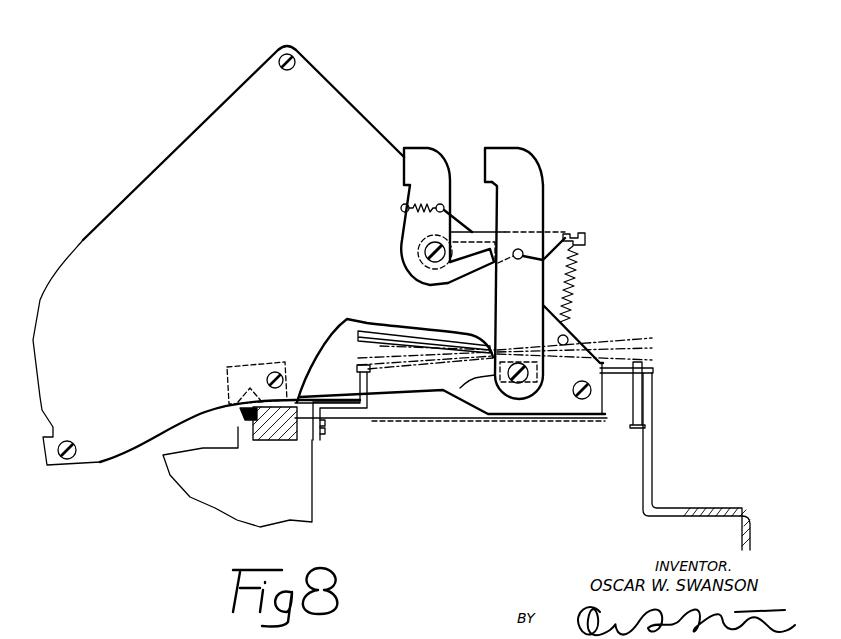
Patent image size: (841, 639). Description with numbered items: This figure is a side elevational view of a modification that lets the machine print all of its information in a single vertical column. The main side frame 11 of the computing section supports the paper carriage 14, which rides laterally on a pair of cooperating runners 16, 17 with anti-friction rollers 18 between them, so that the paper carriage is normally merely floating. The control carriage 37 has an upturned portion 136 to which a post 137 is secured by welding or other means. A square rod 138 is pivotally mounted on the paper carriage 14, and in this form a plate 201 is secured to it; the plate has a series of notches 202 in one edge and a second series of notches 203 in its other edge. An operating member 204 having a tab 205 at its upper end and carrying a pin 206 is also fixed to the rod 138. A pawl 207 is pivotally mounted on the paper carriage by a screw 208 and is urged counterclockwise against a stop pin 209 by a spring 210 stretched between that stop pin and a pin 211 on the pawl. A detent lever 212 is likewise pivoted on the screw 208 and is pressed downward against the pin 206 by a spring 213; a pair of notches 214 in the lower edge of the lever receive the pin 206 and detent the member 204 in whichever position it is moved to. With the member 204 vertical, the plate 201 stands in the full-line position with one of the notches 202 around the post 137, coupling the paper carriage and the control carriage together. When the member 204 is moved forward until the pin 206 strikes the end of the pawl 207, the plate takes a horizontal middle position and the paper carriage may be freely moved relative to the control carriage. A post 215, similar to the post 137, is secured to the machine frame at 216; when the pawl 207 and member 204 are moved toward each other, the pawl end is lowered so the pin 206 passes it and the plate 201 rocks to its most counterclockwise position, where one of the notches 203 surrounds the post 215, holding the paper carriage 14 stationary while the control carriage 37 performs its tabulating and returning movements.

The main side frame 11 is at (310, 480).
The paper carriage 14 is at (94, 228).
The runner 16 is at (247, 364).
The runner 17 is at (276, 440).
The anti-friction rollers 18 is at (240, 414).
The control carriage 37 is at (718, 500).
The upturned portion 136 is at (652, 466).
The post 137 is at (632, 422).
The square rod 138 is at (540, 375).
The plate 201 is at (428, 327).
The notches 202 is at (654, 371).
The notches 203 is at (364, 328).
The operating member 204 is at (545, 192).
The tab 205 is at (493, 150).
The pin 206 is at (519, 260).
The pawl 207 is at (430, 152).
The screw 208 is at (425, 252).
The stop pin 209 is at (400, 208).
The spring 210 is at (424, 206).
The pin 211 is at (447, 208).
The detent lever 212 is at (566, 236).
The spring 213 is at (576, 280).
The notches 214 is at (485, 266).
The post 215 is at (368, 392).
The frame attachment point 216 is at (324, 430).